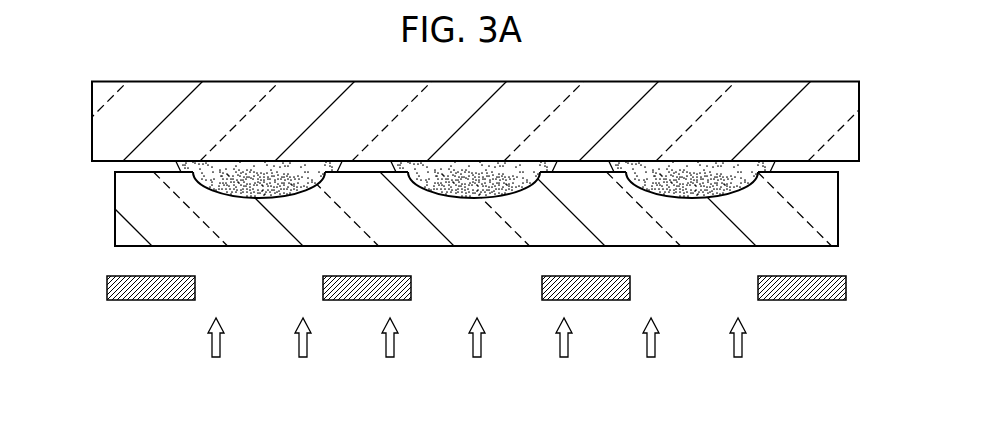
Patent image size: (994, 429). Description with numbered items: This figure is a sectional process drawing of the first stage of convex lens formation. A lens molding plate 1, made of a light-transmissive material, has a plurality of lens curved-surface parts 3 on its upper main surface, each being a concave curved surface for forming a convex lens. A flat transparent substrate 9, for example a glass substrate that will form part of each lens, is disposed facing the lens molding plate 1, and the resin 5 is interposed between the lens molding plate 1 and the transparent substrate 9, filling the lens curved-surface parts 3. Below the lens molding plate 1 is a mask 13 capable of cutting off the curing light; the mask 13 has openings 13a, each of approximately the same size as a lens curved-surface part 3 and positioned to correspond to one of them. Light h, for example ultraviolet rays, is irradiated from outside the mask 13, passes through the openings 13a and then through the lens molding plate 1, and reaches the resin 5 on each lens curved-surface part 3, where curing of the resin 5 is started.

The lens molding plate 1 is at (135, 205).
The lens curved-surface parts 3 is at (205, 188).
The resin 5 is at (299, 184).
The transparent substrate 9 is at (151, 86).
The mask 13 is at (477, 338).
The openings 13a is at (630, 288).
The light h is at (312, 346).